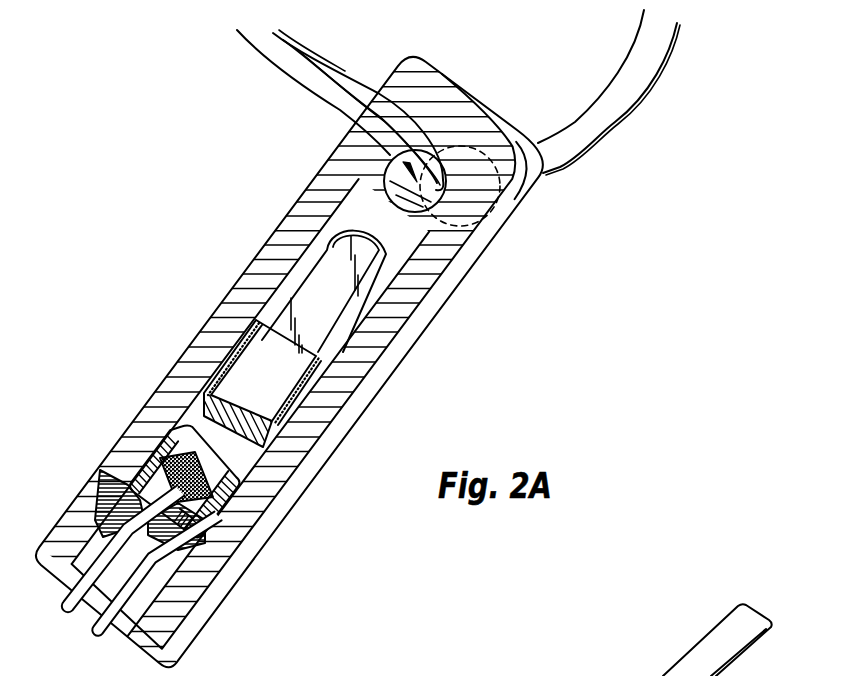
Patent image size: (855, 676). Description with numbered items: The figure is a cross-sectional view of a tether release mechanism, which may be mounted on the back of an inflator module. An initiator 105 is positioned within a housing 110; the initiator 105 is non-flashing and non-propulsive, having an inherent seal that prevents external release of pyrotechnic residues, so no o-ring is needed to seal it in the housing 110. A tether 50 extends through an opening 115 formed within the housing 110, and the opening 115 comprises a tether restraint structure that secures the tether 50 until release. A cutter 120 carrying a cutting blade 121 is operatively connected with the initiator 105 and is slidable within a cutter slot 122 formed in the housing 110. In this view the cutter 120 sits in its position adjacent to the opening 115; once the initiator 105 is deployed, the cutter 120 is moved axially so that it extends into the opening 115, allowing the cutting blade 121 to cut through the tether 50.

The tether 50 is at (613, 115).
The initiator 105 is at (233, 517).
The housing 110 is at (415, 287).
The opening 115 is at (358, 123).
The cutter 120 is at (340, 318).
The cutting blade 121 is at (377, 210).
The cutter slot 122 is at (408, 238).